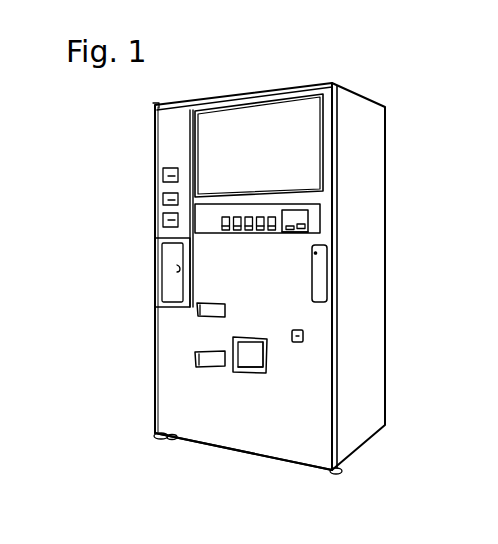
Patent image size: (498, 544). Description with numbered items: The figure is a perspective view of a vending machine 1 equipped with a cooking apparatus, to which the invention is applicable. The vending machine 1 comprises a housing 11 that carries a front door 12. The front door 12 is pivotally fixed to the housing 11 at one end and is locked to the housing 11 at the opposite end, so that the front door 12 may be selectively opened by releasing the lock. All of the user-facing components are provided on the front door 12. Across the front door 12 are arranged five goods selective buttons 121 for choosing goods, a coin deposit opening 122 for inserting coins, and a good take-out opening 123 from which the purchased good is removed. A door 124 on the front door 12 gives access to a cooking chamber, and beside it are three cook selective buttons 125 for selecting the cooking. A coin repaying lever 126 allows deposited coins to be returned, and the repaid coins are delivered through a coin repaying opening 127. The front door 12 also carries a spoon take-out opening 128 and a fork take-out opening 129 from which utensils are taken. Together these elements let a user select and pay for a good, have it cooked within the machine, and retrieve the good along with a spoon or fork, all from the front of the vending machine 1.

The vending machine 1 is at (390, 203).
The housing 11 is at (376, 355).
The front door 12 is at (229, 444).
The goods selective buttons 121 is at (272, 216).
The coin deposit opening 122 is at (305, 226).
The good take-out opening 123 is at (258, 363).
The door for access to a cooking chamber 124 is at (173, 265).
The cook selective buttons 125 is at (163, 176).
The coin repaying lever 126 is at (285, 234).
The coin repaying opening 127 is at (303, 337).
The spoon take-out opening 128 is at (195, 360).
The fork take-out opening 129 is at (197, 312).